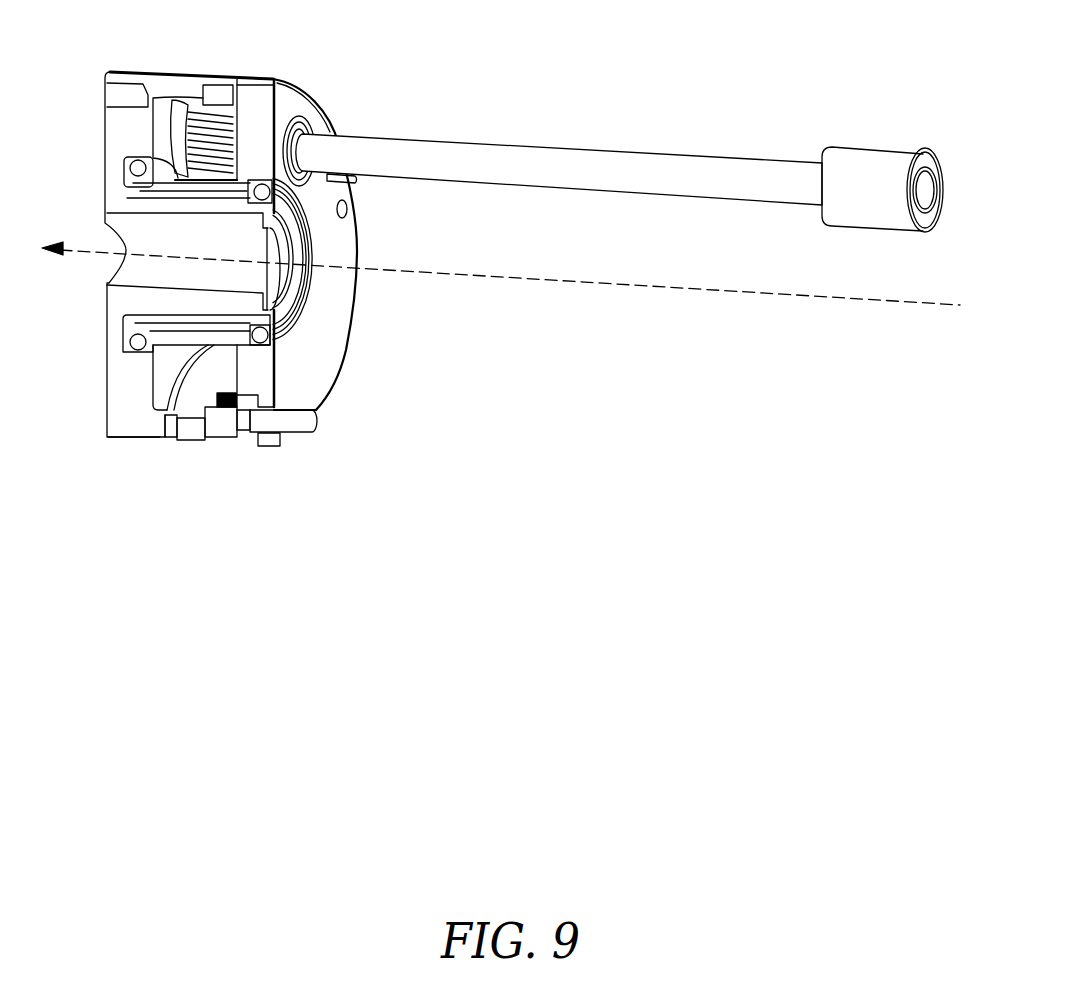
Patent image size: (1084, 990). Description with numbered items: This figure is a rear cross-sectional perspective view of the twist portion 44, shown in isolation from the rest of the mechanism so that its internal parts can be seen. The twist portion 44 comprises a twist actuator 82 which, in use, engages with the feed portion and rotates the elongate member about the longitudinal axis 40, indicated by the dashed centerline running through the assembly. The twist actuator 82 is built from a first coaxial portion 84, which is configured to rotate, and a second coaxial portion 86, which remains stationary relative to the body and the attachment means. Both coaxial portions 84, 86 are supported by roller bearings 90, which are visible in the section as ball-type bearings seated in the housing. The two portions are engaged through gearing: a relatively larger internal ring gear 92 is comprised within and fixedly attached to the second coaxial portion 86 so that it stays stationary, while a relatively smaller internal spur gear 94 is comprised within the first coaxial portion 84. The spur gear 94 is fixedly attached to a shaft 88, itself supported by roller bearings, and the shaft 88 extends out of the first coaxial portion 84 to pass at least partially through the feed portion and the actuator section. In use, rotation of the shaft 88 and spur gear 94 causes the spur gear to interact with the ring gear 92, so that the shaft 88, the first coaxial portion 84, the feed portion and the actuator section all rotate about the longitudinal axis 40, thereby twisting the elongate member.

The twist actuator 82 is at (183, 224).
The internal spur gear 94 is at (208, 96).
The shaft 88 is at (613, 150).
The roller bearings 90 is at (239, 258).
The first coaxial portion 84 is at (360, 244).
The second coaxial portion 86 is at (180, 294).
The internal ring gear 92 is at (241, 451).
The twist portion 44 is at (152, 510).
The longitudinal axis 40 is at (501, 318).